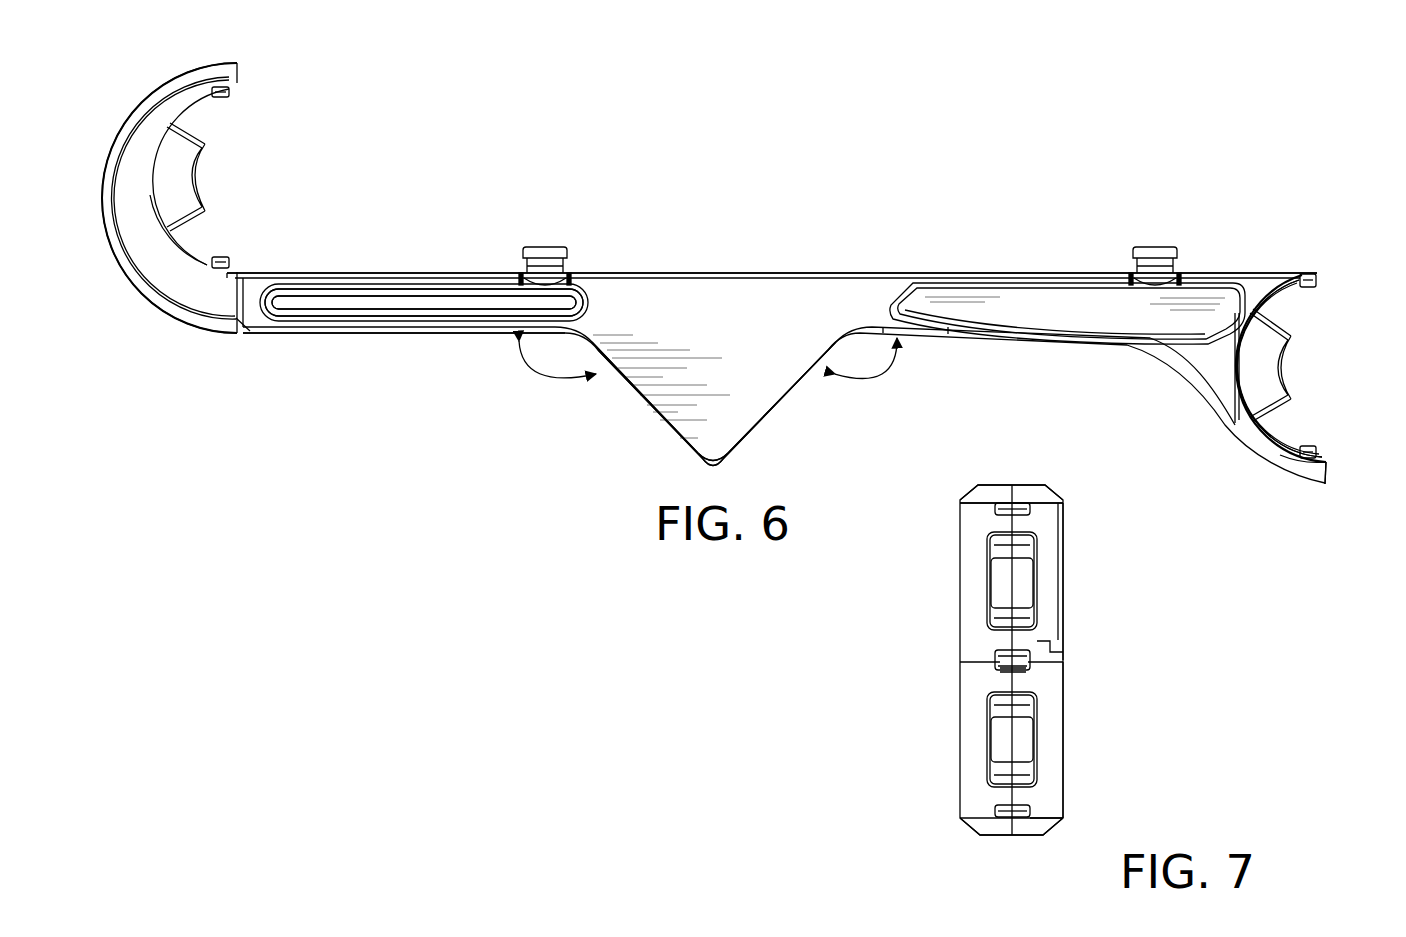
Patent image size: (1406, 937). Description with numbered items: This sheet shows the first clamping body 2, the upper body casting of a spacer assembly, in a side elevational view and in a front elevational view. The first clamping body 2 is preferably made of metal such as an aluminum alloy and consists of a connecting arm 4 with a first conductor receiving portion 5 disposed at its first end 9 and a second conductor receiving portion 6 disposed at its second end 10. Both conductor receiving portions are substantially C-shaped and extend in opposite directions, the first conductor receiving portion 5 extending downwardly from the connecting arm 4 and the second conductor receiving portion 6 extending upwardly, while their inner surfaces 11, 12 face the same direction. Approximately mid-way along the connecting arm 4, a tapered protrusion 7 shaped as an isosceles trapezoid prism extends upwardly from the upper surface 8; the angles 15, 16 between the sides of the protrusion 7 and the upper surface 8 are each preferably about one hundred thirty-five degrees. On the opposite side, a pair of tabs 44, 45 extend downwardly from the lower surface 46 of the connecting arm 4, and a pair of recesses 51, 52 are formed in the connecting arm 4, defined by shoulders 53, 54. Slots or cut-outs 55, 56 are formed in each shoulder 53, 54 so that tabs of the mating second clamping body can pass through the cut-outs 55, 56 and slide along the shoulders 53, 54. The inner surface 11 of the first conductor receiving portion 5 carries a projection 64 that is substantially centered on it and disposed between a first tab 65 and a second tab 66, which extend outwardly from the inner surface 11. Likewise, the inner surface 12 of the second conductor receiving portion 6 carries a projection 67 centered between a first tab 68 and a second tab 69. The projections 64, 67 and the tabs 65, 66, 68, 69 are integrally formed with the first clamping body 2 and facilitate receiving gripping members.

In FIG. 6, the first clamping body 2 is at (640, 270).
In FIG. 7, the first clamping body 2 is at (958, 598).
In FIG. 6, the connecting arm 4 is at (948, 276).
In FIG. 6, the first conductor receiving portion 5 is at (113, 250).
In FIG. 7, the first conductor receiving portion 5 is at (1064, 556).
In FIG. 6, the second conductor receiving portion 6 is at (1252, 466).
In FIG. 7, the second conductor receiving portion 6 is at (1064, 790).
In FIG. 6, the tapered protrusion 7 is at (660, 418).
In FIG. 6, the upper surface 8 is at (456, 336).
In FIG. 6, the first end 9 is at (119, 135).
In FIG. 7, the first end 9 is at (1040, 497).
In FIG. 6, the second end 10 is at (1326, 480).
In FIG. 7, the second end 10 is at (1040, 832).
In FIG. 6, the inner surface 11 is at (1290, 420).
In FIG. 7, the inner surface 11 is at (1062, 608).
In FIG. 6, the inner surface 12 is at (212, 238).
In FIG. 7, the inner surface 12 is at (1050, 808).
In FIG. 6, the angle 15 is at (547, 382).
In FIG. 6, the angle 16 is at (878, 378).
In FIG. 6, the tab 44 is at (545, 247).
In FIG. 6, the tab 45 is at (1160, 247).
In FIG. 6, the lower surface 46 is at (385, 276).
In FIG. 6, the recess 51 is at (345, 305).
In FIG. 6, the recess 52 is at (1048, 300).
In FIG. 6, the shoulder 53 is at (383, 323).
In FIG. 6, the shoulder 54 is at (1128, 343).
In FIG. 6, the cut-out 55 is at (540, 283).
In FIG. 6, the cut-out 56 is at (1180, 278).
In FIG. 6, the projection 64 is at (196, 175).
In FIG. 7, the projection 64 is at (988, 580).
In FIG. 6, the first tab 65 is at (230, 94).
In FIG. 7, the first tab 65 is at (975, 518).
In FIG. 6, the second tab 66 is at (230, 262).
In FIG. 7, the second tab 66 is at (995, 656).
In FIG. 6, the projection 67 is at (1282, 328).
In FIG. 7, the projection 67 is at (1035, 737).
In FIG. 6, the first tab 68 is at (1318, 452).
In FIG. 7, the first tab 68 is at (990, 810).
In FIG. 6, the second tab 69 is at (1318, 282).
In FIG. 7, the second tab 69 is at (1005, 672).